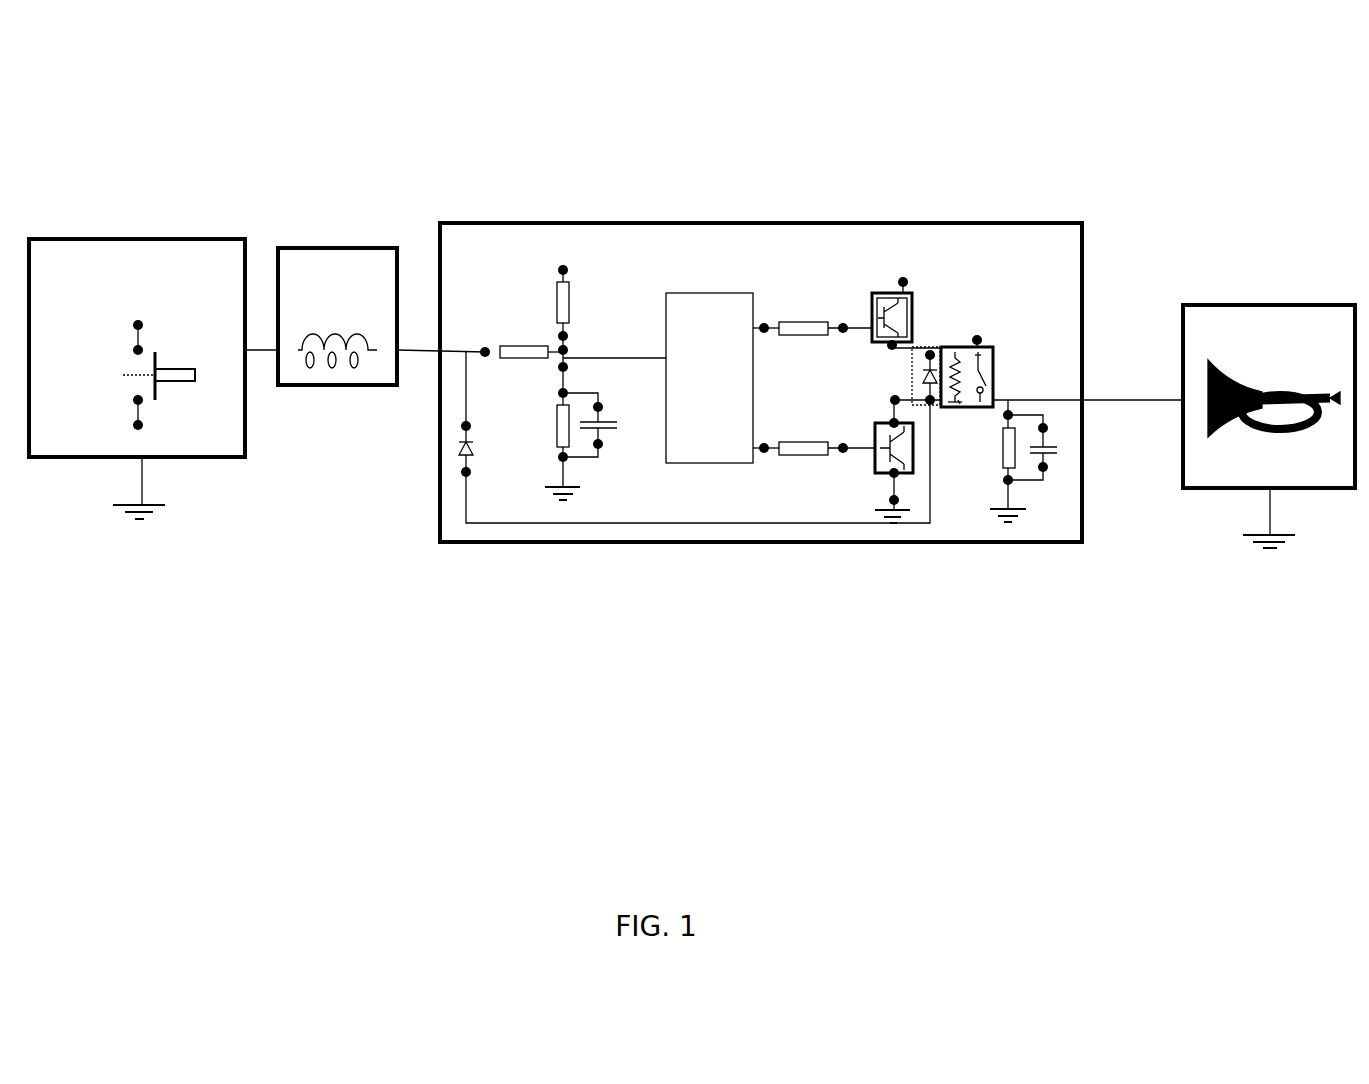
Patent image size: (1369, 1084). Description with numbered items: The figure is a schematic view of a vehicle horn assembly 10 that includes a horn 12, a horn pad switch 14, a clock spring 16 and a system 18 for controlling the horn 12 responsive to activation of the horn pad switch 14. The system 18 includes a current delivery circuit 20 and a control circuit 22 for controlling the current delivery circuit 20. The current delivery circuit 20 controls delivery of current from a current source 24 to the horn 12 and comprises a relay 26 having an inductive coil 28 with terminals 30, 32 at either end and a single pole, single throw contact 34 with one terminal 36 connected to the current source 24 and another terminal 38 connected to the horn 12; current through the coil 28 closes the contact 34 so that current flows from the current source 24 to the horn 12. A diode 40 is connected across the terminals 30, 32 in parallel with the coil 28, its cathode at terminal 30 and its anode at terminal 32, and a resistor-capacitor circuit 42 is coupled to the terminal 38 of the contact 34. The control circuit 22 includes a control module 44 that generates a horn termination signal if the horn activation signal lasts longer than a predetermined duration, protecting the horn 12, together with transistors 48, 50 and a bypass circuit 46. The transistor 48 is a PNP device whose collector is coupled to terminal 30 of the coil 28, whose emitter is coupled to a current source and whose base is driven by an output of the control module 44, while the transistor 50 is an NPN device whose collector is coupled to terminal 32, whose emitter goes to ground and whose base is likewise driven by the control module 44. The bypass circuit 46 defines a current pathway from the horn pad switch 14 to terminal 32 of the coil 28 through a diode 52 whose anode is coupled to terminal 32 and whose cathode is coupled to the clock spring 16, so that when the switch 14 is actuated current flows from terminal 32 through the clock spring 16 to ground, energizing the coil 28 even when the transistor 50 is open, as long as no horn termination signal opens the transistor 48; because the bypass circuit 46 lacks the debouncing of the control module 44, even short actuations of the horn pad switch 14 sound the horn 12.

The vehicle horn assembly 10 is at (447, 120).
The horn 12 is at (1320, 320).
The horn pad switch 14 is at (97, 245).
The clock spring 16 is at (373, 257).
The system for controlling horn 18 is at (520, 230).
The current delivery circuit 20 is at (1043, 503).
The control circuit 22 is at (646, 508).
The current source 24 is at (978, 313).
The relay 26 is at (997, 362).
The inductive coil 28 is at (963, 397).
The coil terminal 30 is at (948, 347).
The coil terminal 32 is at (935, 407).
The single pole, single throw contact 34 is at (992, 378).
The contact terminal 36 is at (995, 352).
The contact terminal 38 is at (992, 392).
The diode 40 is at (925, 378).
The resistor-capacitor (RC) circuit 42 is at (1045, 468).
The control module 44 is at (675, 347).
The bypass circuit 46 is at (508, 545).
The transistor 48 is at (902, 292).
The transistor 50 is at (875, 473).
The diode 52 is at (460, 444).